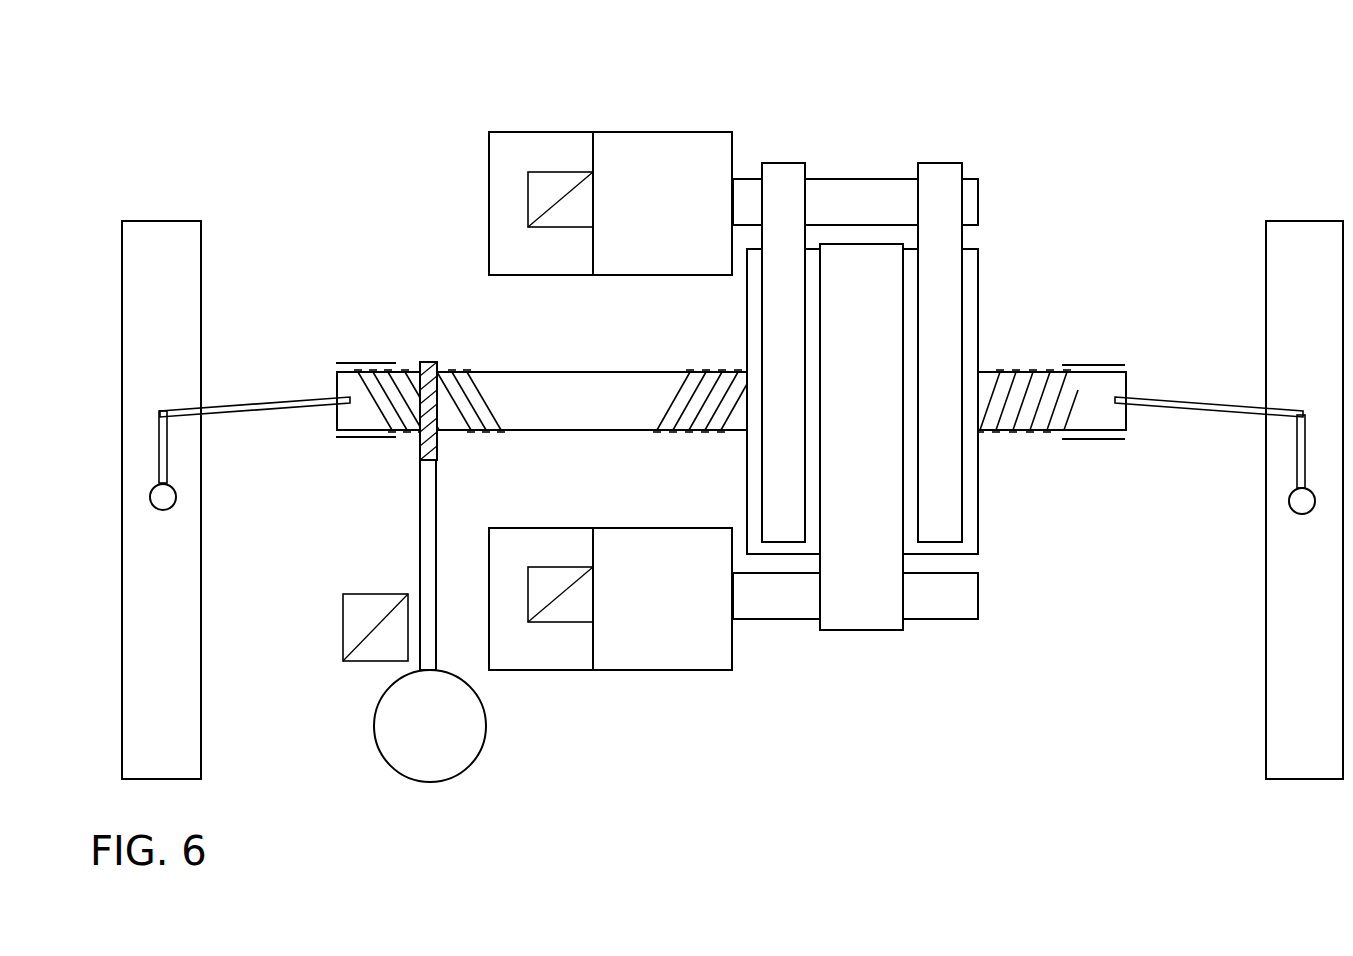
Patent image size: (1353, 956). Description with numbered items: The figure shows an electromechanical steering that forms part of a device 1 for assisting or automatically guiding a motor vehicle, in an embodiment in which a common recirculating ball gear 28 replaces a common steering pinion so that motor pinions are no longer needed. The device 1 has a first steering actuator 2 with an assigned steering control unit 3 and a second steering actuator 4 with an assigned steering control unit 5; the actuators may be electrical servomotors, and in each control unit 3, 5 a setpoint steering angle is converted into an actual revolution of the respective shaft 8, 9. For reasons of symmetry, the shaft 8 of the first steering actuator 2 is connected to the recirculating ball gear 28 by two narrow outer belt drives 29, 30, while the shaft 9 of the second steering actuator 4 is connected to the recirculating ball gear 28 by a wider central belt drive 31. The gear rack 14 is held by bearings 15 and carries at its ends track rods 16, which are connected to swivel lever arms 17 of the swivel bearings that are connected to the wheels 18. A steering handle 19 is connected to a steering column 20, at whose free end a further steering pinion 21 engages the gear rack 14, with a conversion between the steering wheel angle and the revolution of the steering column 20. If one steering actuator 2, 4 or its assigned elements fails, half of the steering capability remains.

The device 1 is at (905, 110).
The first steering actuator 2 is at (672, 152).
The steering control unit 3 is at (557, 152).
The second steering actuator 4 is at (667, 652).
The steering control unit 5 is at (540, 652).
The shaft 8 is at (853, 196).
The shaft 9 is at (968, 594).
The gear rack 14 is at (508, 387).
The bearings 15 is at (370, 363).
The track rods 16 is at (279, 400).
The swivel lever arms 17 is at (167, 456).
The wheels 18 is at (170, 568).
The steering handle 19 is at (465, 746).
The steering column 20 is at (428, 541).
The further steering pinion 21 is at (430, 440).
The common recirculating ball gear 28 is at (968, 467).
The narrow outer belt drive 29 is at (781, 173).
The narrow outer belt drive 30 is at (940, 173).
The wider central belt drive 31 is at (861, 609).